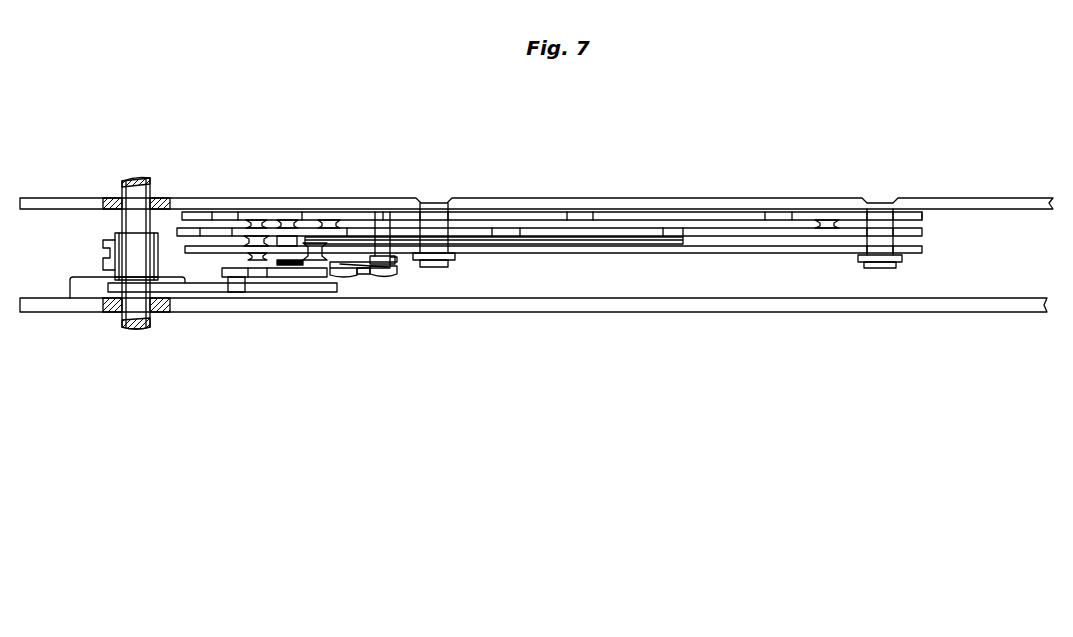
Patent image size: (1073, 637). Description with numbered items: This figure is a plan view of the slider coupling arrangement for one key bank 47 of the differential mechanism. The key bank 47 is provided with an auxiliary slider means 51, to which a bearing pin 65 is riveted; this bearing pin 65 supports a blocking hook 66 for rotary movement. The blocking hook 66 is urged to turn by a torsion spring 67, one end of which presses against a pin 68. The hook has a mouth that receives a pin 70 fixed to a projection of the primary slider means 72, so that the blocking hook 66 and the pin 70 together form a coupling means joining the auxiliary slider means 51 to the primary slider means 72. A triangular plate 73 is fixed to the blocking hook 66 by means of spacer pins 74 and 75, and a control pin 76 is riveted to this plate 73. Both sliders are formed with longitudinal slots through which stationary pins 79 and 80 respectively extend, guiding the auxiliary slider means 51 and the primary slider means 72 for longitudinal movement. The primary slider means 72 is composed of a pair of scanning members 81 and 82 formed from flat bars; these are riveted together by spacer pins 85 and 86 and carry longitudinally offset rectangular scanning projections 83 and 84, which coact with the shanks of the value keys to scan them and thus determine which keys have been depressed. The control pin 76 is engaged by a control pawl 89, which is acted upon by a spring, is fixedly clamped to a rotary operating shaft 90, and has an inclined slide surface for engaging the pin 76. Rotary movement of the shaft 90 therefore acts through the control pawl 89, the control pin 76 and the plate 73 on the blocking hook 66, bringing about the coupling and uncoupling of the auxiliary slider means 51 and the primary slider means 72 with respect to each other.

The key bank 47 is at (460, 200).
The auxiliary slider means 51 is at (746, 253).
The bearing pin 65 is at (350, 276).
The blocking hook 66 is at (395, 270).
The torsion spring 67 is at (370, 274).
The pin 68 is at (387, 250).
The pin 70 is at (290, 276).
The primary slider means 72 is at (212, 216).
The triangular plate 73 is at (222, 274).
The spacer pin 74 is at (258, 277).
The spacer pin 75 is at (317, 276).
The control pin 76 is at (234, 292).
The stationary pin 79 is at (436, 267).
The stationary pin 80 is at (880, 268).
The scanning member 81 is at (924, 231).
The scanning member 82 is at (918, 213).
The scanning projection 83 is at (587, 214).
The scanning projection 84 is at (504, 228).
The spacer pin 85 is at (241, 220).
The spacer pin 86 is at (818, 222).
The control pawl 89 is at (192, 286).
The rotary operating shaft 90 is at (135, 180).